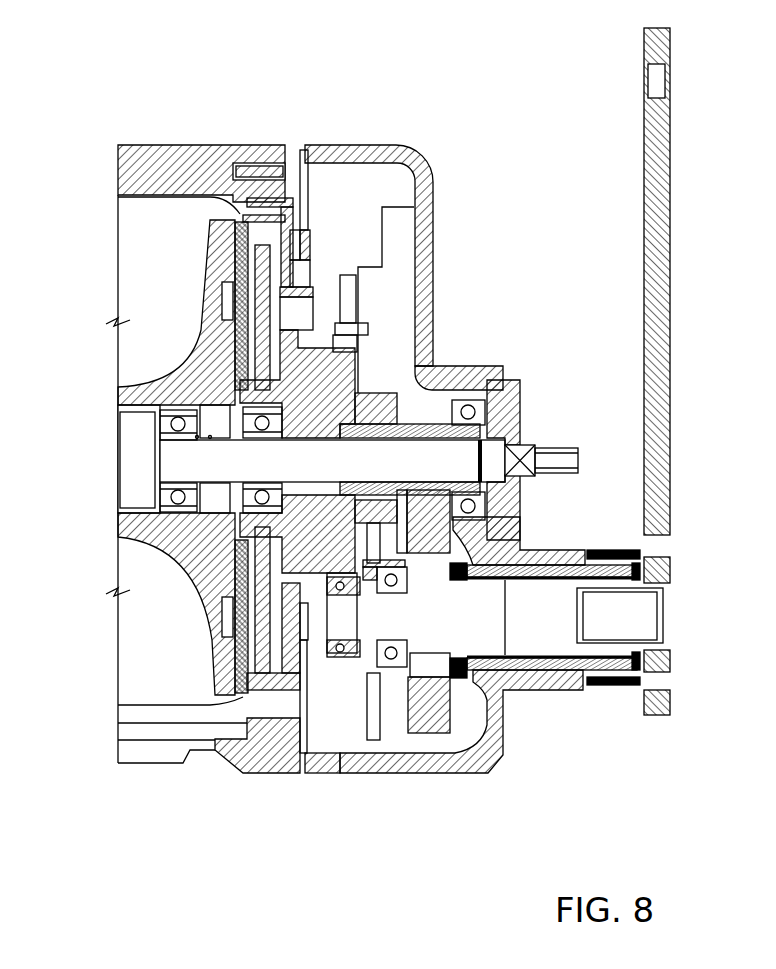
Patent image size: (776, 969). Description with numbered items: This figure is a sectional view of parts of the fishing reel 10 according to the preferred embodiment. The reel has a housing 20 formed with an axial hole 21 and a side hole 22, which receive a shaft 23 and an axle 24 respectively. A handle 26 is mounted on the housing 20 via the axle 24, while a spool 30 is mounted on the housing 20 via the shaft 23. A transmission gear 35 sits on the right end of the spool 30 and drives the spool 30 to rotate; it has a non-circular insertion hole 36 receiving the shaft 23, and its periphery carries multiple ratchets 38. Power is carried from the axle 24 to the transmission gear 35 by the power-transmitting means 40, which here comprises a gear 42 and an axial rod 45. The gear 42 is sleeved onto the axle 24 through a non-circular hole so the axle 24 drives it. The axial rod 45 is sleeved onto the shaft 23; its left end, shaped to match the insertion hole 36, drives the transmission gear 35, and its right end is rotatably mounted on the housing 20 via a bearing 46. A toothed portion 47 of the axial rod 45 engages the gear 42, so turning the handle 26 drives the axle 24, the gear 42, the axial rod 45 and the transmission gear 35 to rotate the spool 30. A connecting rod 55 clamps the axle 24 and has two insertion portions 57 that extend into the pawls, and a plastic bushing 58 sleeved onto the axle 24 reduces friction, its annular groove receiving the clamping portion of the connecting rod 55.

The fishing reel 10 is at (498, 98).
The housing 20 is at (328, 144).
The axial hole 21 is at (519, 424).
The side hole 22 is at (562, 683).
The shaft 23 is at (561, 447).
The axle 24 is at (517, 632).
The handle 26 is at (668, 300).
The spool 30 is at (163, 394).
The transmission gear 35 is at (296, 379).
The insertion hole 36 is at (303, 565).
The ratchets 38 is at (347, 593).
The power-transmitting means 40 is at (437, 383).
The gear 42 is at (427, 720).
The axial rod 45 is at (407, 387).
The bearing 46 is at (468, 400).
The toothed portion 47 is at (415, 383).
The connecting rod 55 is at (326, 325).
The insertion portions 57 is at (367, 327).
The bushing 58 is at (327, 625).